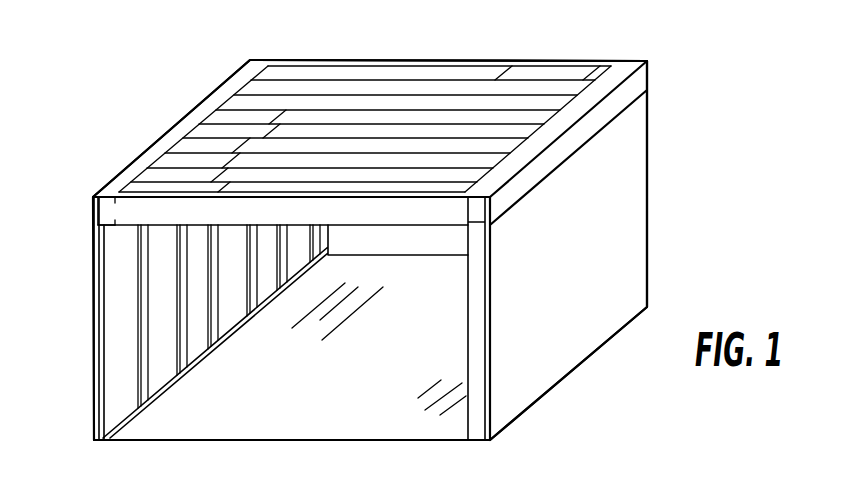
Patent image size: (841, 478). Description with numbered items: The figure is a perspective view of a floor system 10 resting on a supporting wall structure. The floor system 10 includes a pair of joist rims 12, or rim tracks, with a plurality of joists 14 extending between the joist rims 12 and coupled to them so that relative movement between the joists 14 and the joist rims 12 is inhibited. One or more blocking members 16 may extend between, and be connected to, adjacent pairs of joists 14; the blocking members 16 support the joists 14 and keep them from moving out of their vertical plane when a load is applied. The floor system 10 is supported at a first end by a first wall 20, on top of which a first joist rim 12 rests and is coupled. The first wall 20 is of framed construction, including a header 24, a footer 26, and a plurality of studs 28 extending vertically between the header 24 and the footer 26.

The floor system 10 is at (588, 38).
The joist rim 12 is at (113, 178).
The joist 14 is at (334, 60).
The blocking member 16 is at (220, 190).
The first wall 20 is at (86, 326).
The header 24 is at (112, 228).
The footer 26 is at (136, 413).
The stud 28 is at (177, 288).